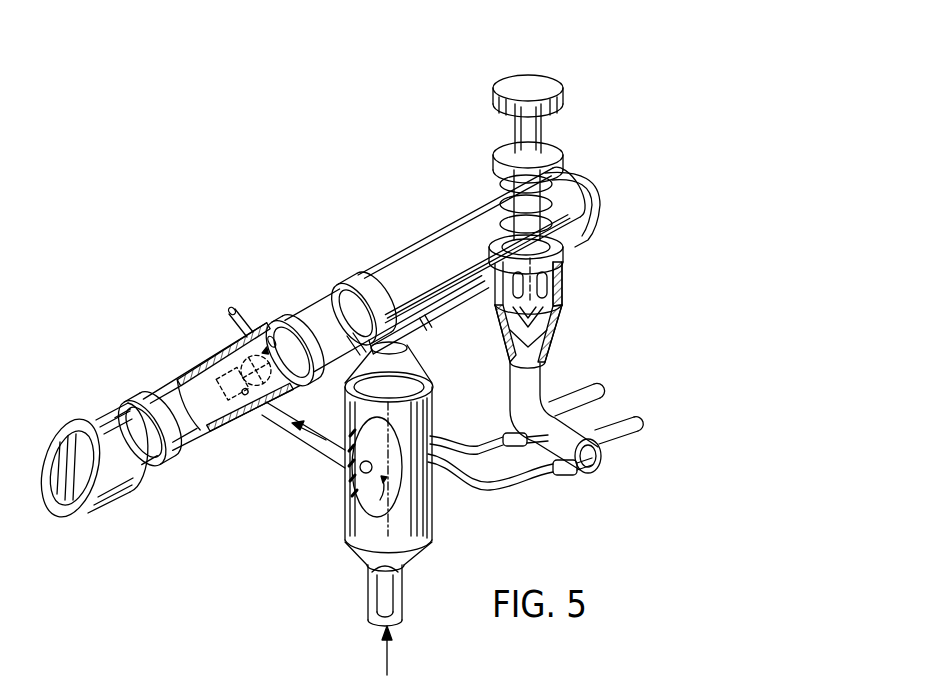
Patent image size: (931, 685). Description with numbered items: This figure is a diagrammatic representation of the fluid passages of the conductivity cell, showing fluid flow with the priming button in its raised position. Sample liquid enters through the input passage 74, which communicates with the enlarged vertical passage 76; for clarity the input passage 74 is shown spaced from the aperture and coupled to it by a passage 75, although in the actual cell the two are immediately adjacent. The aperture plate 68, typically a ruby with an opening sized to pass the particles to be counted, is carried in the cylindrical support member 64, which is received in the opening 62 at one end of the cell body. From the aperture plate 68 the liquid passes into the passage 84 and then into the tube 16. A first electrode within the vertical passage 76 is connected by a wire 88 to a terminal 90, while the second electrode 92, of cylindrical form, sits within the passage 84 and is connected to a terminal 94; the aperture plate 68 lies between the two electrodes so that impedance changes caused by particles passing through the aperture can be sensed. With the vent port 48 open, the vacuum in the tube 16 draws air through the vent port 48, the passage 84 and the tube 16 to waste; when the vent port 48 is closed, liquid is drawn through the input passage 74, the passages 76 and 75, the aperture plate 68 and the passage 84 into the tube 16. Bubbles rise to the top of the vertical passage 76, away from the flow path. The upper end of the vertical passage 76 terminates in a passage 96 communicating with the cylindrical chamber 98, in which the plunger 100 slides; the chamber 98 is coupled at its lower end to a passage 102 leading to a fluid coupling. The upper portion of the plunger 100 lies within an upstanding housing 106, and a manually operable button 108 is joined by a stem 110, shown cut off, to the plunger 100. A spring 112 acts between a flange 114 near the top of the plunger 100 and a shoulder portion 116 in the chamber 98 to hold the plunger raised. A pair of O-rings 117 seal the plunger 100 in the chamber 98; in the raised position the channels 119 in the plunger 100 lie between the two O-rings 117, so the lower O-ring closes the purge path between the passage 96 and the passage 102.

The tube 16 is at (432, 237).
The vent port 48 is at (250, 313).
The opening 62 is at (153, 380).
The cylindrical support member 64 is at (145, 466).
The aperture plate 68 is at (245, 395).
The input passage 74 is at (365, 600).
The passage 75 is at (323, 453).
The enlarged vertical passage 76 is at (430, 397).
The passage 84 is at (293, 378).
The wire 88 is at (505, 490).
The terminal 90 is at (640, 432).
The second electrode 92 is at (326, 303).
The terminal 94 is at (585, 395).
The passage 96 is at (437, 330).
The cylindrical chamber 98 is at (547, 357).
The plunger 100 is at (520, 173).
The passage 102 is at (598, 413).
The upstanding housing 106 is at (495, 322).
The manually operable button 108 is at (562, 82).
The stem 110 is at (548, 130).
The spring 112 is at (590, 213).
The flange 114 is at (565, 153).
The shoulder portion 116 is at (490, 250).
The O-rings 117 is at (560, 278).
The channels 119 is at (555, 318).